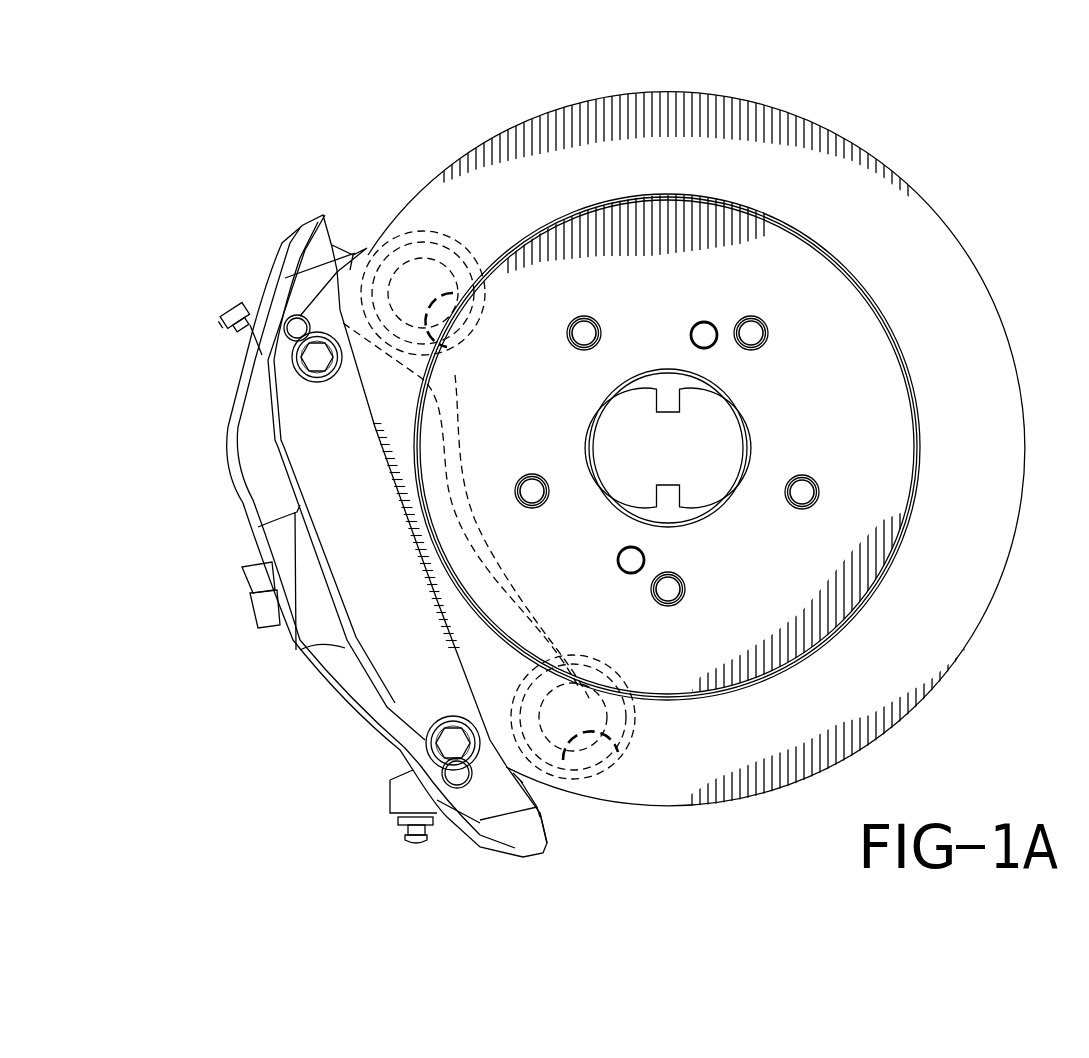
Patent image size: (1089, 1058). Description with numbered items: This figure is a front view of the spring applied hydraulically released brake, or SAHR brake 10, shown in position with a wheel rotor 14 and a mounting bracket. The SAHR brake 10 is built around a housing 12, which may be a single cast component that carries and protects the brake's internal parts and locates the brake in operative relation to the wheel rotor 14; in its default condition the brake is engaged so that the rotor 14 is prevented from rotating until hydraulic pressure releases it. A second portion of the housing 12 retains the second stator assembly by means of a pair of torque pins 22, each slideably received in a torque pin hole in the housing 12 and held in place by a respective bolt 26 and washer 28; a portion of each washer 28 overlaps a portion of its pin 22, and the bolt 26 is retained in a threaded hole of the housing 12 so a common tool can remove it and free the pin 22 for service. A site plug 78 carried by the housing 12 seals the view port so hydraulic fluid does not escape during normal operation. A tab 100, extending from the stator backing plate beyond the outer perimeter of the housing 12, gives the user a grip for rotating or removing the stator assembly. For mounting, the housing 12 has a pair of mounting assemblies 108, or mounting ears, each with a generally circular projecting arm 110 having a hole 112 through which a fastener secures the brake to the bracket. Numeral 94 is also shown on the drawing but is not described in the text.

The SAHR brake 10 is at (163, 155).
The housing 12 is at (252, 457).
The wheel rotor 14 is at (900, 270).
The torque pin 22 is at (297, 320).
The bolt 26 is at (314, 358).
The washer 28 is at (330, 372).
The site plug 78 is at (243, 617).
The fastener 94 is at (218, 318).
The tab 100 is at (296, 568).
The mounting assembly 108 is at (350, 238).
The projecting arm 110 is at (398, 250).
The hole 112 is at (456, 345).